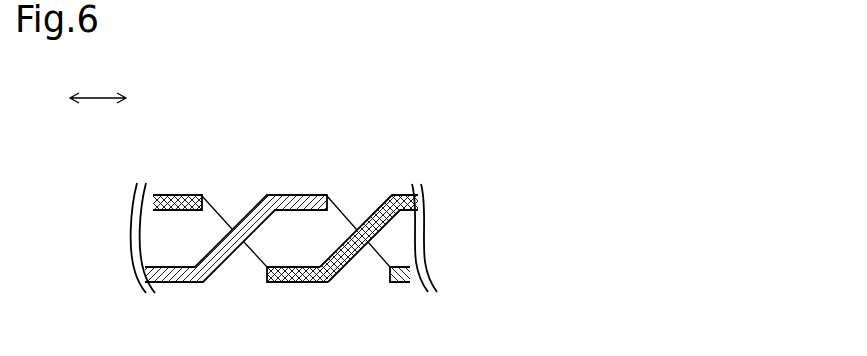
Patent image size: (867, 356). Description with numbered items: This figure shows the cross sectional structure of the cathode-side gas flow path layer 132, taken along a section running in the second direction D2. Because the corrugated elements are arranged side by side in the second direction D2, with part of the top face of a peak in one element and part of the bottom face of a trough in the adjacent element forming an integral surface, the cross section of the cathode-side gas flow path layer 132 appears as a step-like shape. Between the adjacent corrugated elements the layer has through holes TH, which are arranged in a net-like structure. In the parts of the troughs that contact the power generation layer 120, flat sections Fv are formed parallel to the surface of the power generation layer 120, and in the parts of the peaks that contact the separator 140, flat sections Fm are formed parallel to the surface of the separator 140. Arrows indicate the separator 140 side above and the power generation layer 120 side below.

The cathode-side gas flow path layer 132 is at (388, 150).
The separator 140 is at (465, 210).
The power generation layer 120 is at (466, 255).
The through hole TH is at (180, 236).
The flat section Fm is at (165, 195).
The flat section Fv is at (288, 282).
The second direction D2 is at (98, 84).